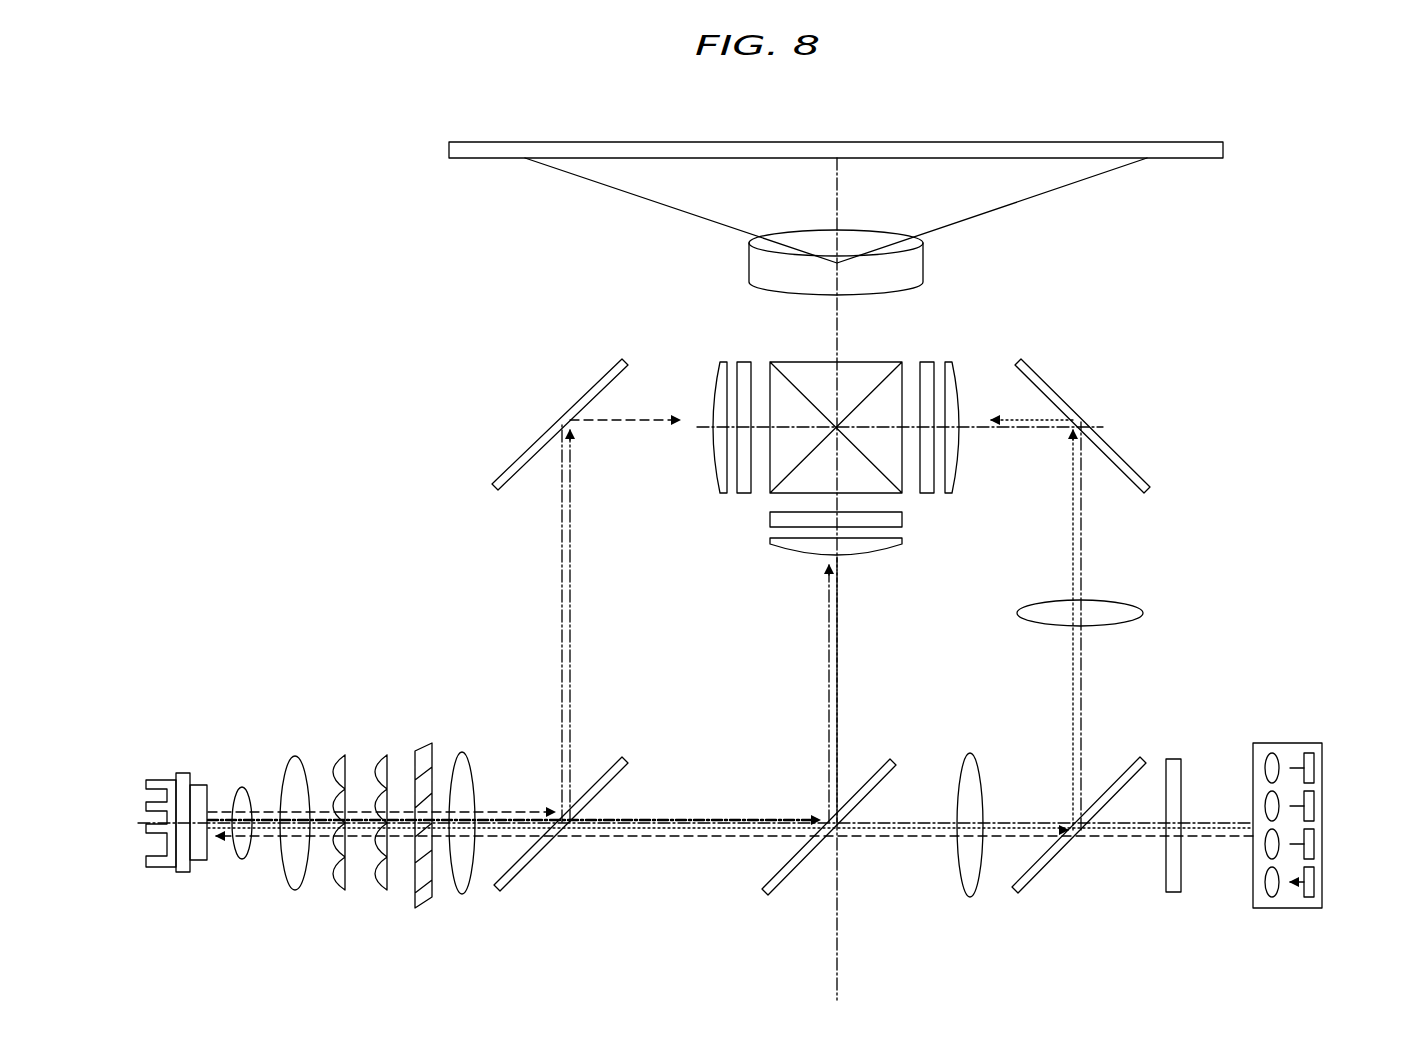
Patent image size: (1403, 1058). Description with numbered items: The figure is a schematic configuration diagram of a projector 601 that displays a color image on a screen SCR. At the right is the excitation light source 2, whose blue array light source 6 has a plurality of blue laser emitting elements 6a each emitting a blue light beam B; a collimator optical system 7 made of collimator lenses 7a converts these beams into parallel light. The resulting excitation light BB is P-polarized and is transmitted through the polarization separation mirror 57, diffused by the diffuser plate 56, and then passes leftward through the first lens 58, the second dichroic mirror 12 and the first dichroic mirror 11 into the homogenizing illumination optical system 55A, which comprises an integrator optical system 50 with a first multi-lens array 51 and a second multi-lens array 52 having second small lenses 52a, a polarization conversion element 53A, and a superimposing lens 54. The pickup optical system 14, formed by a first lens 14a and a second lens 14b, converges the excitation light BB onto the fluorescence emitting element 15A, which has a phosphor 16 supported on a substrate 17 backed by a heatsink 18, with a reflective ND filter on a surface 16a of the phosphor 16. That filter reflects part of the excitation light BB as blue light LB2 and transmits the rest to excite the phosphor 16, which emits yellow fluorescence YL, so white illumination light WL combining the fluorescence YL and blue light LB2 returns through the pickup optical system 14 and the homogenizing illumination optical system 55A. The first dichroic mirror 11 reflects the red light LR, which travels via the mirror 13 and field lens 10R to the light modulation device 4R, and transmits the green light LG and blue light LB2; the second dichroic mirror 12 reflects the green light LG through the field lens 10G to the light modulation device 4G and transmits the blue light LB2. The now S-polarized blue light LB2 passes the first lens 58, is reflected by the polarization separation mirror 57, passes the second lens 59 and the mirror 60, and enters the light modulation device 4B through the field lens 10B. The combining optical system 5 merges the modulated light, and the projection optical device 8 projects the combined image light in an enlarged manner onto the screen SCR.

The projector 601 is at (1222, 130).
The screen SCR is at (1190, 160).
The projection optical device 8 is at (915, 257).
The combining optical system 5 is at (858, 368).
The light modulation device 4R is at (745, 368).
The light modulation device 4G is at (775, 520).
The light modulation device 4B is at (926, 368).
The field lens 10R is at (718, 370).
The field lens 10G is at (778, 546).
The field lens 10B is at (955, 370).
The mirror 13 is at (535, 445).
The mirror 60 is at (1105, 445).
The second lens 59 is at (1110, 605).
The red light LR is at (572, 673).
The green light LG is at (830, 673).
The blue light LB2 is at (1071, 672).
The fluorescence emitting element 15A is at (171, 765).
The heatsink 18 is at (155, 781).
The substrate 17 is at (183, 774).
The phosphor 16 is at (199, 787).
The surface 16a is at (208, 855).
The pickup optical system 14 is at (258, 763).
The first lens 14a is at (243, 788).
The second lens 14b is at (295, 757).
The homogenizing illumination optical system 55A is at (375, 761).
The integrator optical system 50 is at (359, 785).
The first multi-lens array 51 is at (337, 746).
The second multi-lens array 52 is at (381, 746).
The second small lens 52a is at (341, 880).
The polarization conversion element 53A is at (421, 738).
The superimposing lens 54 is at (460, 746).
The white illumination light WL is at (515, 754).
The fluorescence YL is at (489, 778).
The first dichroic mirror 11 is at (618, 776).
The second dichroic mirror 12 is at (887, 778).
The first lens 58 is at (962, 785).
The polarization separation mirror 57 is at (1115, 785).
The diffuser plate 56 is at (1172, 764).
The excitation light source 2 is at (1292, 792).
The collimator optical system 7 is at (1276, 743).
The collimator lens 7a is at (1265, 770).
The blue array light source 6 is at (1312, 743).
The blue laser emitting element 6a is at (1315, 765).
The light beam B is at (1295, 768).
The excitation light BB is at (1213, 840).